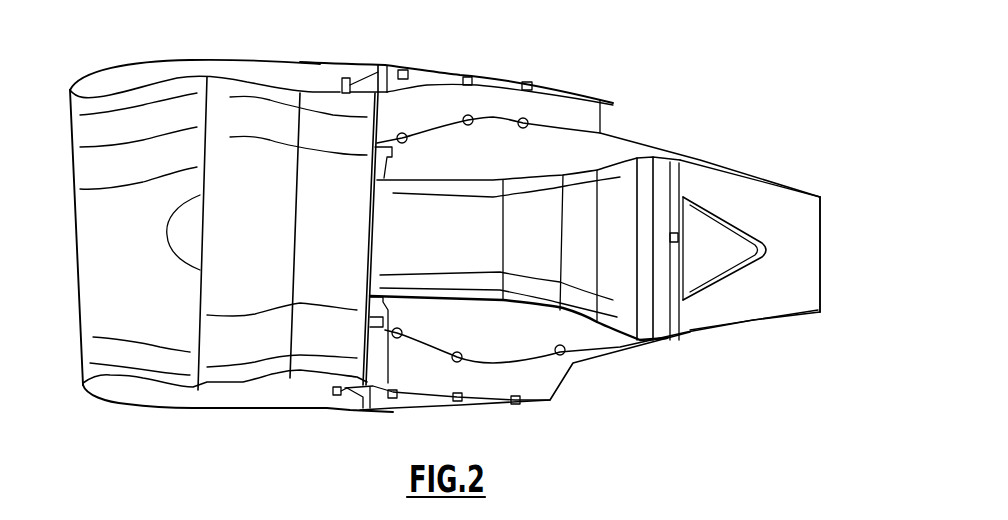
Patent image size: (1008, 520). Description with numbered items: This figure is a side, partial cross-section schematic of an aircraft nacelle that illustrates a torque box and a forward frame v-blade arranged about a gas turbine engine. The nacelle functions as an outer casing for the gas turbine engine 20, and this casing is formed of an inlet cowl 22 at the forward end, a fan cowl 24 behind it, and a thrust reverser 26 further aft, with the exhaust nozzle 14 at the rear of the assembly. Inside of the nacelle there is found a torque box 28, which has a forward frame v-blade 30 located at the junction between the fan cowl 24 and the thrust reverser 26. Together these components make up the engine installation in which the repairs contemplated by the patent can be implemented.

The exhaust nozzle 14 is at (740, 168).
The gas turbine engine 20 is at (405, 257).
The inlet cowl 22 is at (137, 62).
The fan cowl 24 is at (323, 63).
The thrust reverser 26 is at (547, 83).
The torque box 28 is at (378, 63).
The forward frame v-blade 30 is at (339, 84).